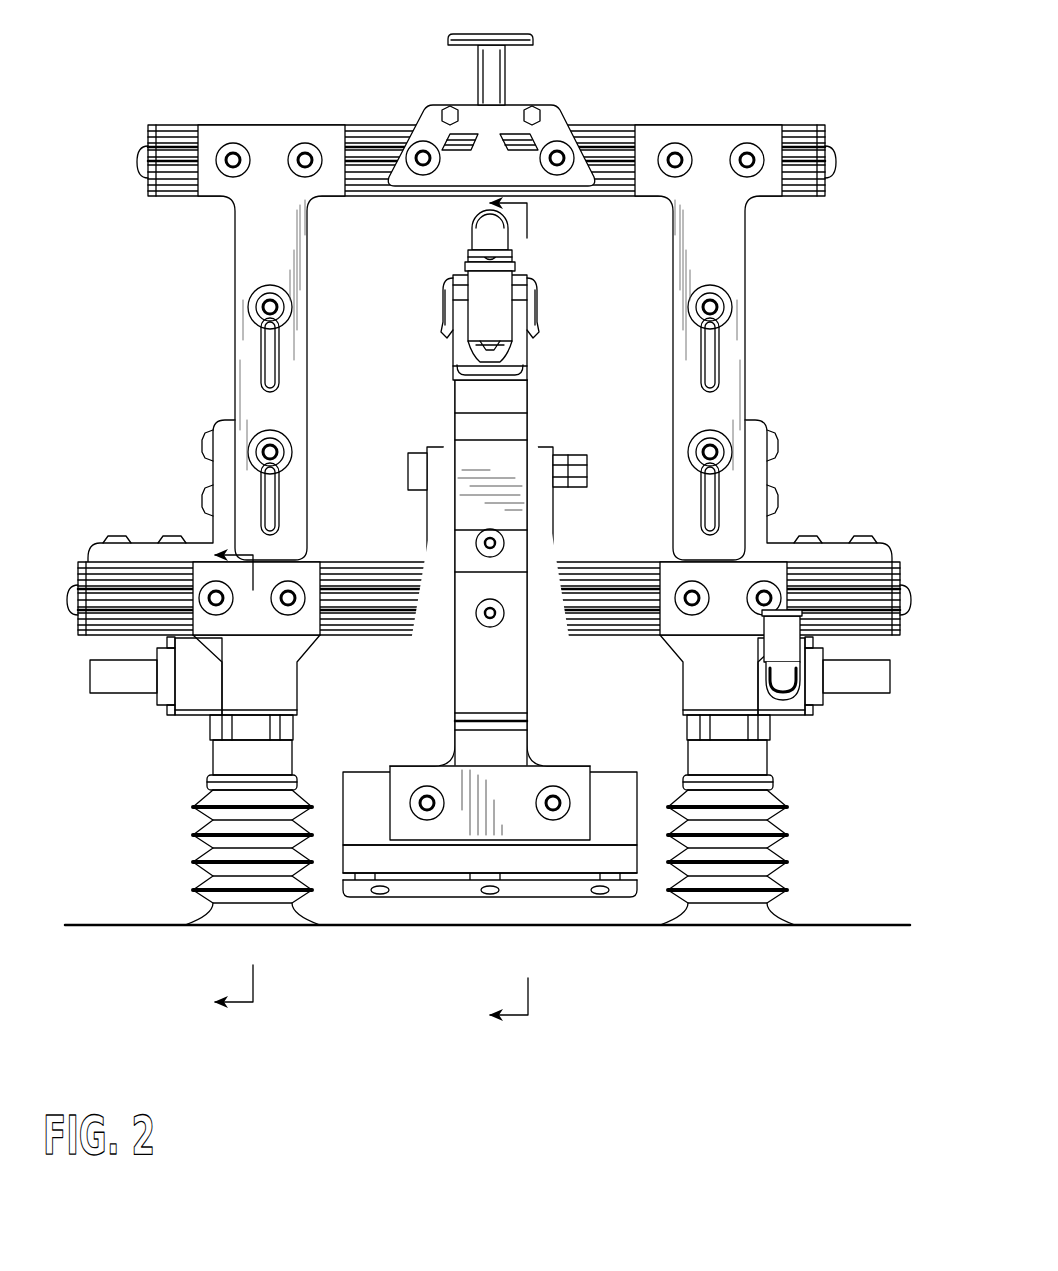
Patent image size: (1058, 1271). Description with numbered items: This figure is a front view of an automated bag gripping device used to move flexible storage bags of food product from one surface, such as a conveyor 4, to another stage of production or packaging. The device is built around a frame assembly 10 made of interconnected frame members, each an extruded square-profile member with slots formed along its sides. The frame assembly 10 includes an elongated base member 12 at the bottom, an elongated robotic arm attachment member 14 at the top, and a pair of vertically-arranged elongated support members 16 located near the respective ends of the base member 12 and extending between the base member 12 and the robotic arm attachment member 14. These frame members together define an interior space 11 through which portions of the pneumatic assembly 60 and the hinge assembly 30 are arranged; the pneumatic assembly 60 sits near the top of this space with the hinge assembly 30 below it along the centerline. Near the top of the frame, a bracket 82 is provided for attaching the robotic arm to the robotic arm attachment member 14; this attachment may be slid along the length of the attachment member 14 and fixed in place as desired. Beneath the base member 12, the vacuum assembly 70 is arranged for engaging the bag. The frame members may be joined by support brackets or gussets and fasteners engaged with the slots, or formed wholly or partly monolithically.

The frame assembly 10 is at (702, 106).
The interior space 11 is at (386, 288).
The conveyor 4 is at (529, 622).
The elongated base member 12 is at (890, 638).
The elongated robotic arm attachment member 14 is at (608, 125).
The vertically-arranged elongated support members 16 is at (235, 352).
The hinge assembly 30 is at (579, 438).
The pneumatic assembly 60 is at (553, 272).
The vacuum assembly 70 is at (806, 826).
The bracket 82 is at (523, 98).